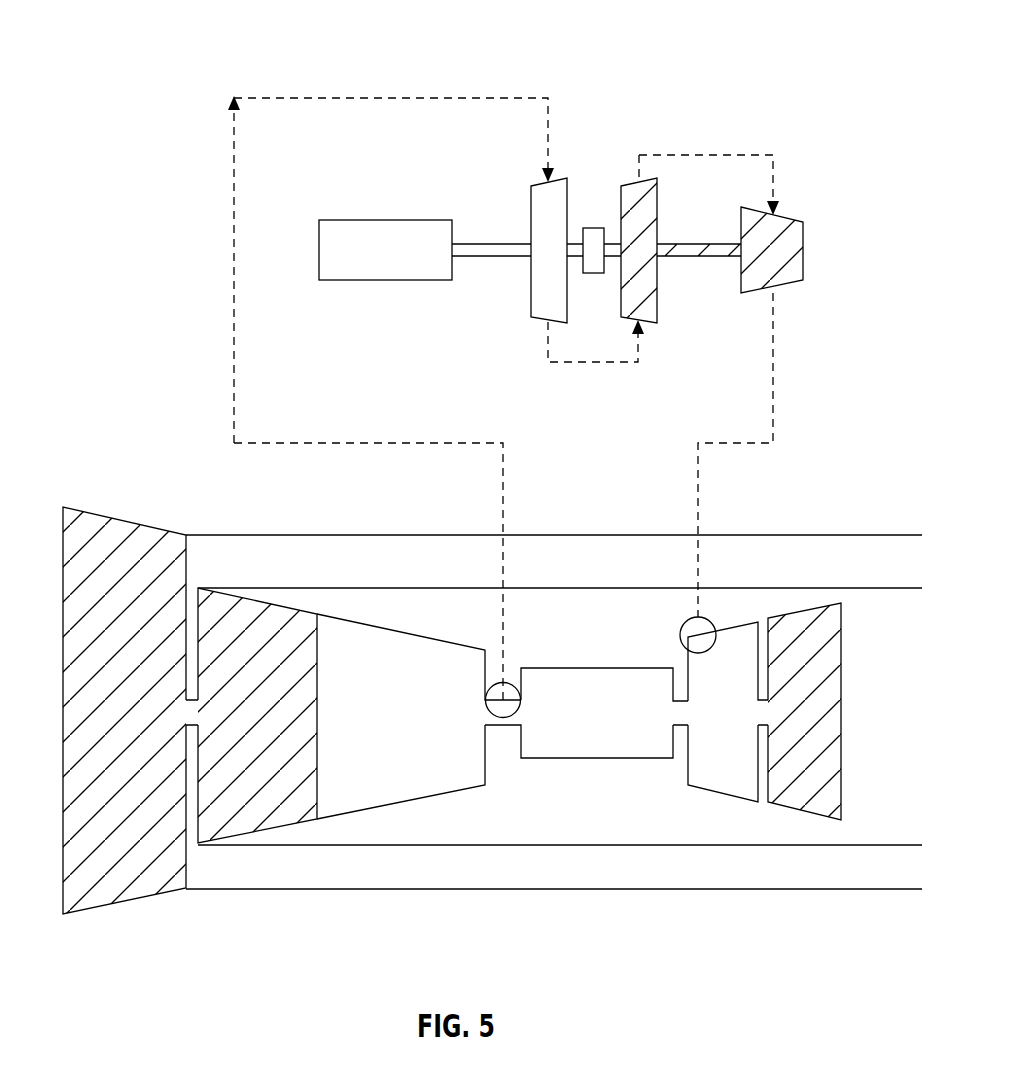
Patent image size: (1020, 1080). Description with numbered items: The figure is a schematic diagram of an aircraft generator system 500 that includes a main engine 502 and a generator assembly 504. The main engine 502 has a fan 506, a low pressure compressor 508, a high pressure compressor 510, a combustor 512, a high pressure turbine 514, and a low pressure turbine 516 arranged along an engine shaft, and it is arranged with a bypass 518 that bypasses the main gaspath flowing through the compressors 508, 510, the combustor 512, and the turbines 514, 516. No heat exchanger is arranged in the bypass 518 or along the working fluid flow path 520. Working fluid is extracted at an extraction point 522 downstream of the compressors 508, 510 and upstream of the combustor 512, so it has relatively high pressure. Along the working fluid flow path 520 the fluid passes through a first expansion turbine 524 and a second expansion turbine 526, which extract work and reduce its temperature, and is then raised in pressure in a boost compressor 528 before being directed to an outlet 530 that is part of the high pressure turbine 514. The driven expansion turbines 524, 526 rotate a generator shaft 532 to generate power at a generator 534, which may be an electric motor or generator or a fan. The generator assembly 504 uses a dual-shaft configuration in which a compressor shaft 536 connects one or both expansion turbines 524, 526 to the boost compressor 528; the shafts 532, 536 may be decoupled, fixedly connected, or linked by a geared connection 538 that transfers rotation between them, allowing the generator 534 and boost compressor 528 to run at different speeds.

The aircraft generator system 500 is at (157, 62).
The main engine 502 is at (60, 723).
The generator assembly 504 is at (297, 254).
The fan 506 is at (92, 895).
The low pressure compressor 508 is at (230, 828).
The high pressure compressor 510 is at (335, 792).
The combustor 512 is at (555, 738).
The high pressure turbine 514 is at (704, 773).
The low pressure turbine 516 is at (802, 795).
The bypass 518 is at (861, 573).
The working fluid flow path 520 is at (232, 419).
The extraction point 522 is at (510, 678).
The first expansion turbine 524 is at (540, 195).
The second expansion turbine 526 is at (647, 305).
The boost compressor 528 is at (793, 240).
The outlet 530 is at (699, 630).
The generator shaft 532 is at (495, 250).
The generator 534 is at (365, 235).
The compressor shaft 536 is at (678, 250).
The geared connection 538 is at (592, 262).